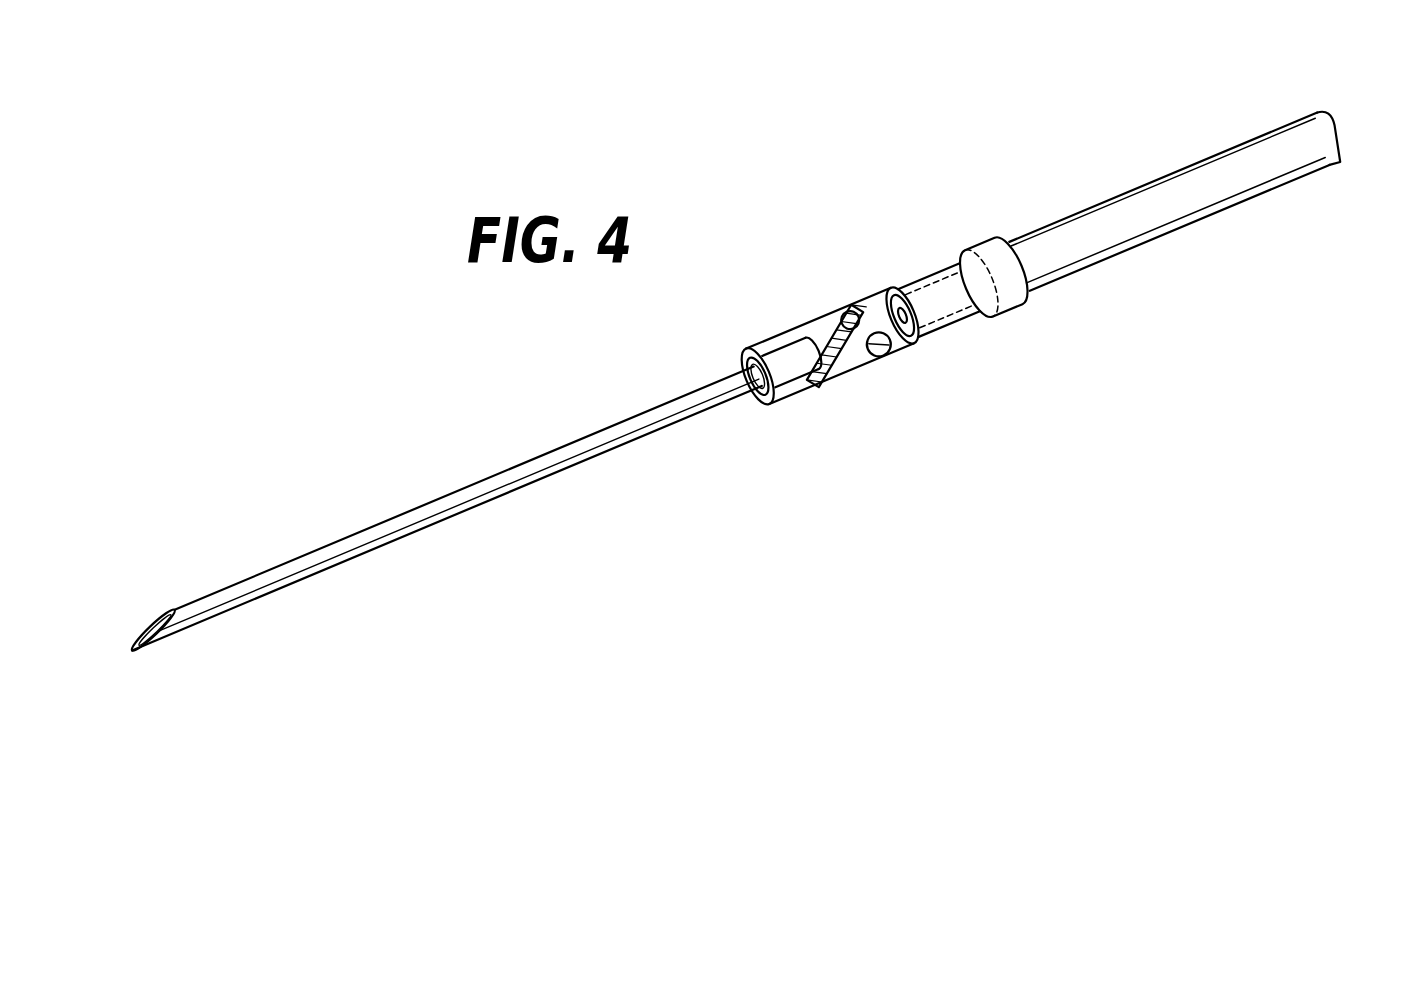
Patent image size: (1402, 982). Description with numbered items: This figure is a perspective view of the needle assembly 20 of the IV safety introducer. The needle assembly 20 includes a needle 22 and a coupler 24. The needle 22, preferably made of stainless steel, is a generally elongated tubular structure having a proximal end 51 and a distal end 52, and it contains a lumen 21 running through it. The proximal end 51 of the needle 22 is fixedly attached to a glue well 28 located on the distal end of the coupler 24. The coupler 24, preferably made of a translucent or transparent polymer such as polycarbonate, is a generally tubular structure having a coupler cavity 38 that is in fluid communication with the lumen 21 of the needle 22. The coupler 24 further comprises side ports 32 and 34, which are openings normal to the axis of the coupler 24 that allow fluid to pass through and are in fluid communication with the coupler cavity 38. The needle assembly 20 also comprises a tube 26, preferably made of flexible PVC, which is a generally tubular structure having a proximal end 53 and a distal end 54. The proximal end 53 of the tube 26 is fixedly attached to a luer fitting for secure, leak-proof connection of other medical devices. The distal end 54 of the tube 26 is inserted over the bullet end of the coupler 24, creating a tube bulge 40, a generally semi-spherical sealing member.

The needle assembly 20 is at (633, 590).
The lumen 21 is at (142, 629).
The needle 22 is at (277, 592).
The coupler 24 is at (838, 377).
The tube 26 is at (1160, 234).
The glue well 28 is at (757, 394).
The side port 32 is at (882, 354).
The side port 34 is at (843, 308).
The coupler cavity 38 is at (817, 358).
The tube bulge 40 is at (1012, 310).
The proximal end 51 is at (812, 350).
The distal end 52 is at (133, 652).
The proximal end 53 is at (1331, 128).
The distal end 54 is at (937, 270).